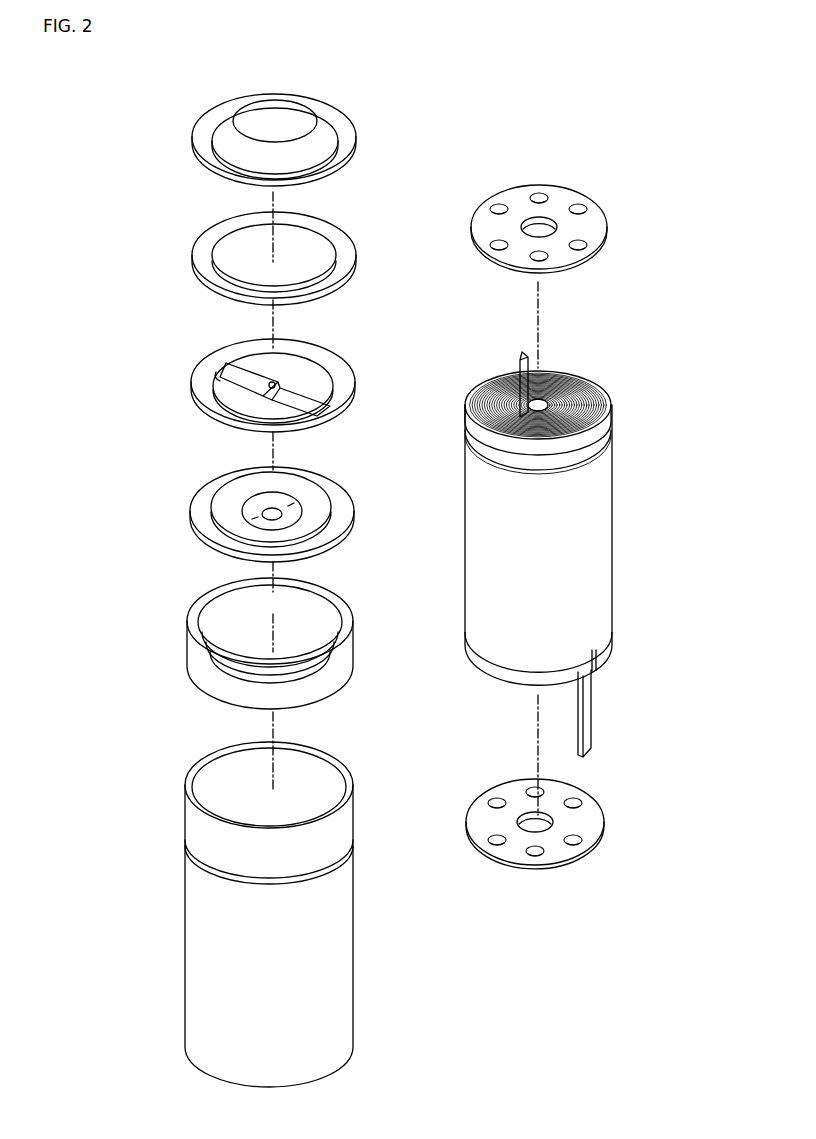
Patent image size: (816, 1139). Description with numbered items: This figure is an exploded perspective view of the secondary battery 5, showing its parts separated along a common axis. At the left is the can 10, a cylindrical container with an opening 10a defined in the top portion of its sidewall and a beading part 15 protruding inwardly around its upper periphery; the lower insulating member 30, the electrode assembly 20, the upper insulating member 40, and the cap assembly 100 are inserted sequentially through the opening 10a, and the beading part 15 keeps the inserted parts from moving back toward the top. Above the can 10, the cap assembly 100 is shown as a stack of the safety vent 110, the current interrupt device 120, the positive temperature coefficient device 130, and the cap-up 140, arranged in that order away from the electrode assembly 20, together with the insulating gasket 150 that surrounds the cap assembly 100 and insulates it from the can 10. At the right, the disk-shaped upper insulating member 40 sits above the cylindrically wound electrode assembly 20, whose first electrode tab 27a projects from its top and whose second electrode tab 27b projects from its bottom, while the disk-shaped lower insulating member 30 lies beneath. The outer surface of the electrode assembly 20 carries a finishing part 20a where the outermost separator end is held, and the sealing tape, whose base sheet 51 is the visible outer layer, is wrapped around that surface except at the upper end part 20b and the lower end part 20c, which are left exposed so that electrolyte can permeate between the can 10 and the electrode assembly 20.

The secondary battery 5 is at (553, 120).
The can 10 is at (200, 931).
The opening 10a is at (208, 775).
The beading part 15 is at (190, 853).
The electrode assembly 20 is at (598, 417).
The finishing part 20a is at (592, 405).
The upper end part 20b is at (468, 441).
The lower end part 20c is at (470, 659).
The first electrode tab 27a is at (520, 358).
The second electrode tab 27b is at (588, 714).
The lower insulating member 30 is at (597, 823).
The upper insulating member 40 is at (600, 224).
The base sheet 51 is at (607, 540).
The cap assembly 100 is at (100, 131).
The safety vent 110 is at (200, 511).
The current interrupt device 120 is at (200, 388).
The positive temperature coefficient device 130 is at (200, 258).
The cap-up 140 is at (200, 140).
The insulating gasket 150 is at (200, 658).